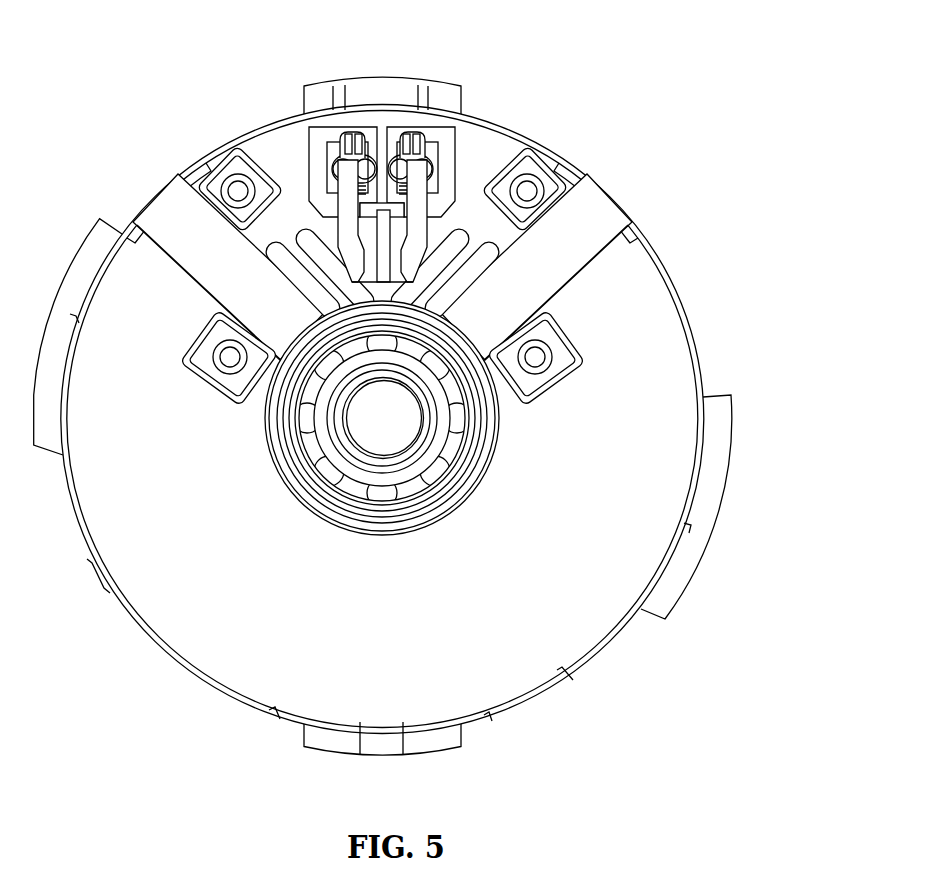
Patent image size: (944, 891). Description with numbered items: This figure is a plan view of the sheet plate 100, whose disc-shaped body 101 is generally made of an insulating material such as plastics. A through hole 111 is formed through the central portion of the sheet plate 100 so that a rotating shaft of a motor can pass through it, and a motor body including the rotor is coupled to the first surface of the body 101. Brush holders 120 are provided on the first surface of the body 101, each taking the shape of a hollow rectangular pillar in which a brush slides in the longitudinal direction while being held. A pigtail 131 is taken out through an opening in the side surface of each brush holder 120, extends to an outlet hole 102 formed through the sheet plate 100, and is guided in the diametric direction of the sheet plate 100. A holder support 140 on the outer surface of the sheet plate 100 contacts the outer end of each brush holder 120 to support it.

The sheet plate 100 is at (566, 153).
The body 101 is at (657, 347).
The outlet hole 102 is at (432, 150).
The through hole 111 is at (414, 456).
The brush holder 120 is at (583, 253).
The pigtail 131 is at (422, 210).
The holder support 140 is at (457, 247).